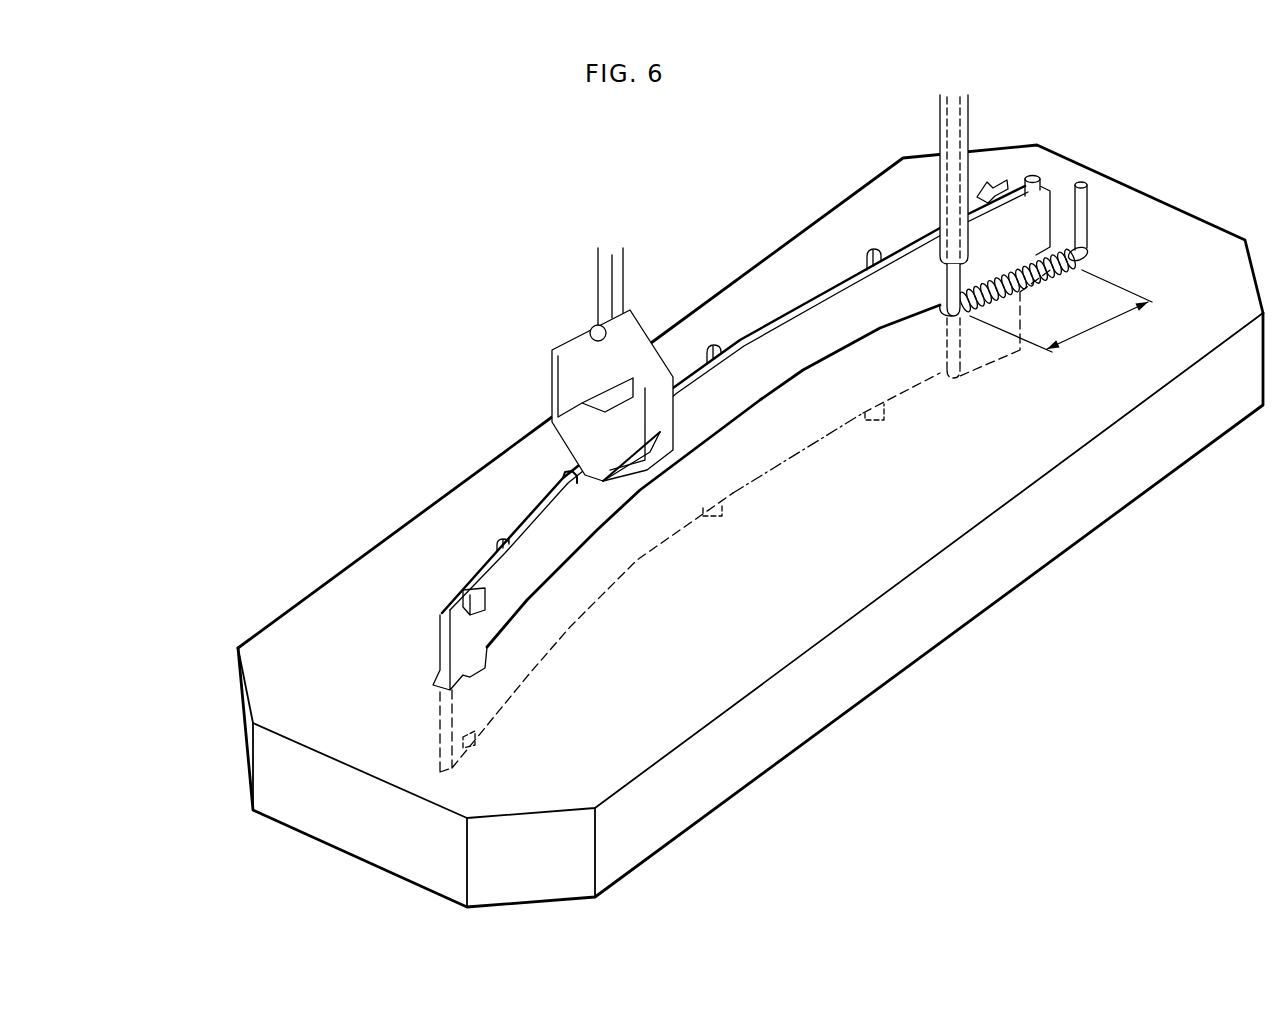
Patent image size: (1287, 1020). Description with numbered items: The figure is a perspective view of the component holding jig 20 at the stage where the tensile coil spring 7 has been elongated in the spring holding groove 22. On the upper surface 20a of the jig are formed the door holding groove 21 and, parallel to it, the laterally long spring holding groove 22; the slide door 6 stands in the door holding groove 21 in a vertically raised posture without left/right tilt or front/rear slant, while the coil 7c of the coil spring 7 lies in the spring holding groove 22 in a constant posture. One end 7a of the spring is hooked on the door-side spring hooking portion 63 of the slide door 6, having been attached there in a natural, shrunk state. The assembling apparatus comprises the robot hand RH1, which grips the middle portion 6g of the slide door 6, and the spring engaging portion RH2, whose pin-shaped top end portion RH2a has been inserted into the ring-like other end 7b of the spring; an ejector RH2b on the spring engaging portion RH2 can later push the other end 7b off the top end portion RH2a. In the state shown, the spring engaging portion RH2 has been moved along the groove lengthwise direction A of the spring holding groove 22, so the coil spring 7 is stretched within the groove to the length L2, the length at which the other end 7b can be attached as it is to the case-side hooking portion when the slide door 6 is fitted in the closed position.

The slide door 6 is at (715, 438).
The middle portion 6g is at (572, 499).
The tensile coil spring 7 is at (1041, 364).
The one end 7a is at (1090, 248).
The other end 7b is at (950, 300).
The coil 7c is at (1078, 284).
The component holding jig 20 is at (749, 526).
The upper surface 20a is at (322, 641).
The door holding groove 21 is at (487, 657).
The spring holding groove 22 is at (970, 318).
The door-side spring hooking portion 63 is at (1050, 195).
The robot hand RH1 is at (590, 336).
The spring engaging portion RH2 is at (949, 232).
The pin-shaped top end portion RH2a is at (942, 263).
The ejector RH2b is at (940, 135).
The length L2 is at (1061, 312).
The groove lengthwise direction A is at (992, 179).